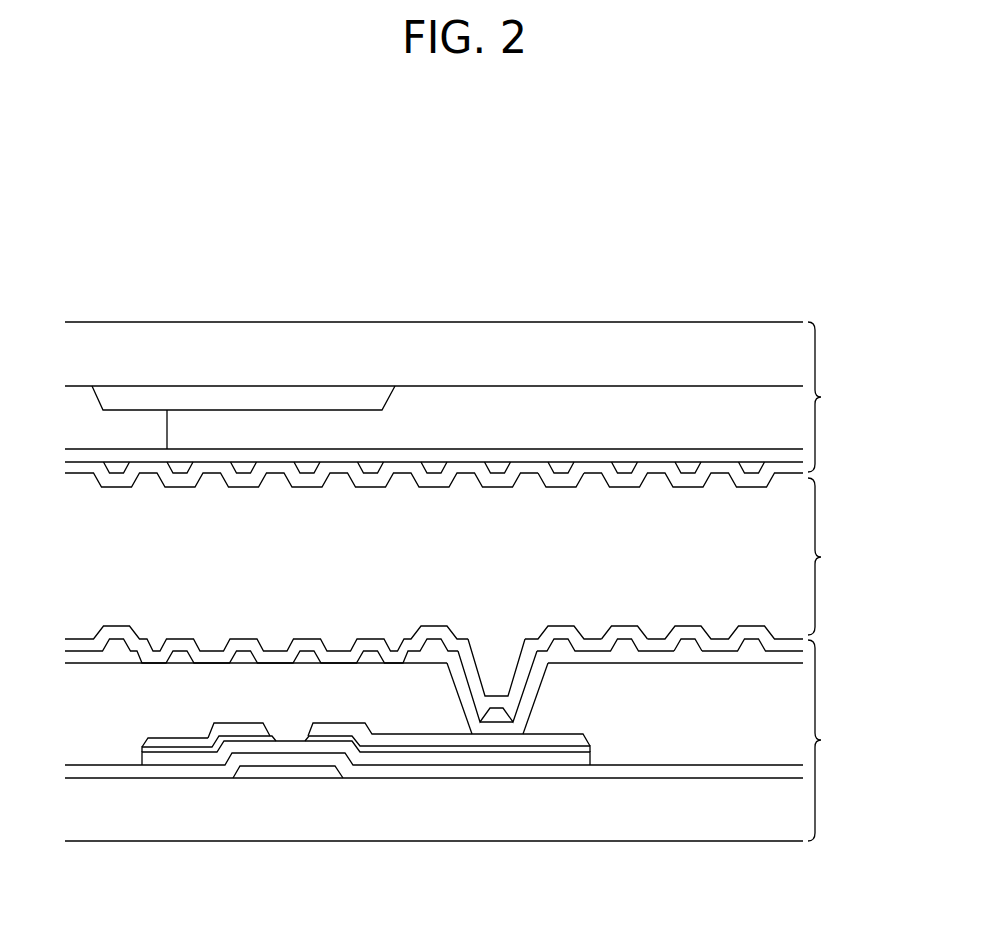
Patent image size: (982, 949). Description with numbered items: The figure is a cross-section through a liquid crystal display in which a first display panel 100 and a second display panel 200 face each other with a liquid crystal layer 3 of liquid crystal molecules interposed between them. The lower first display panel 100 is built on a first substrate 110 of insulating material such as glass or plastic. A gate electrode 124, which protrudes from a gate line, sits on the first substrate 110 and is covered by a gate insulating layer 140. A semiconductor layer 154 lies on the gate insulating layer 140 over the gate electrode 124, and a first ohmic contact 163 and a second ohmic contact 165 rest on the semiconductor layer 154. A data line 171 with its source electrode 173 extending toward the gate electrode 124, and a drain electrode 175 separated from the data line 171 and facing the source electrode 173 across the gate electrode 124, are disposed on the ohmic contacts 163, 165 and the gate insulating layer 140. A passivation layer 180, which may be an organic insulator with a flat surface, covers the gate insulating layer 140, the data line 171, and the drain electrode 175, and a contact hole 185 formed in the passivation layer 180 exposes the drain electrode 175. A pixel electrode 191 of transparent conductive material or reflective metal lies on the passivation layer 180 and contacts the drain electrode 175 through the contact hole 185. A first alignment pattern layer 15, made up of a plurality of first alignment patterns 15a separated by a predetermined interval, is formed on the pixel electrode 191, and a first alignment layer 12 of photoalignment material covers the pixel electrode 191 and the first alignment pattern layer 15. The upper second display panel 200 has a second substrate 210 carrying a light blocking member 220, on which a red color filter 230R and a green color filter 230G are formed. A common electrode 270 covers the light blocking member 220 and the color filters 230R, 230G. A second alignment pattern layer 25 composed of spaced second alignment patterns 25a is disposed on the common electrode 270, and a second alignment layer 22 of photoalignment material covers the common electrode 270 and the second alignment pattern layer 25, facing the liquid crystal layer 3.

The second display panel 200 is at (463, 414).
The second substrate 210 is at (547, 343).
The light blocking member 220 is at (300, 397).
The red color filter 230R is at (122, 440).
The green color filter 230G is at (563, 440).
The common electrode 270 is at (334, 455).
The second alignment layer 22 is at (403, 468).
The second alignment pattern layer 25 is at (563, 490).
The second alignment pattern 25a is at (498, 468).
The liquid crystal layer 3 is at (824, 556).
The first display panel 100 is at (463, 730).
The first alignment layer 12 is at (757, 630).
The first alignment pattern layer 15 is at (628, 622).
The first alignment pattern 15a is at (692, 645).
The pixel electrode 191 is at (82, 657).
The contact hole 185 is at (537, 696).
The passivation layer 180 is at (714, 740).
The drain electrode 175 is at (528, 740).
The source electrode 173 is at (247, 727).
The data line 171 is at (150, 744).
The first ohmic contact 163 is at (202, 746).
The second ohmic contact 165 is at (397, 748).
The semiconductor layer 154 is at (315, 748).
The gate insulating layer 140 is at (643, 772).
The gate electrode 124 is at (278, 772).
The first substrate 110 is at (473, 822).